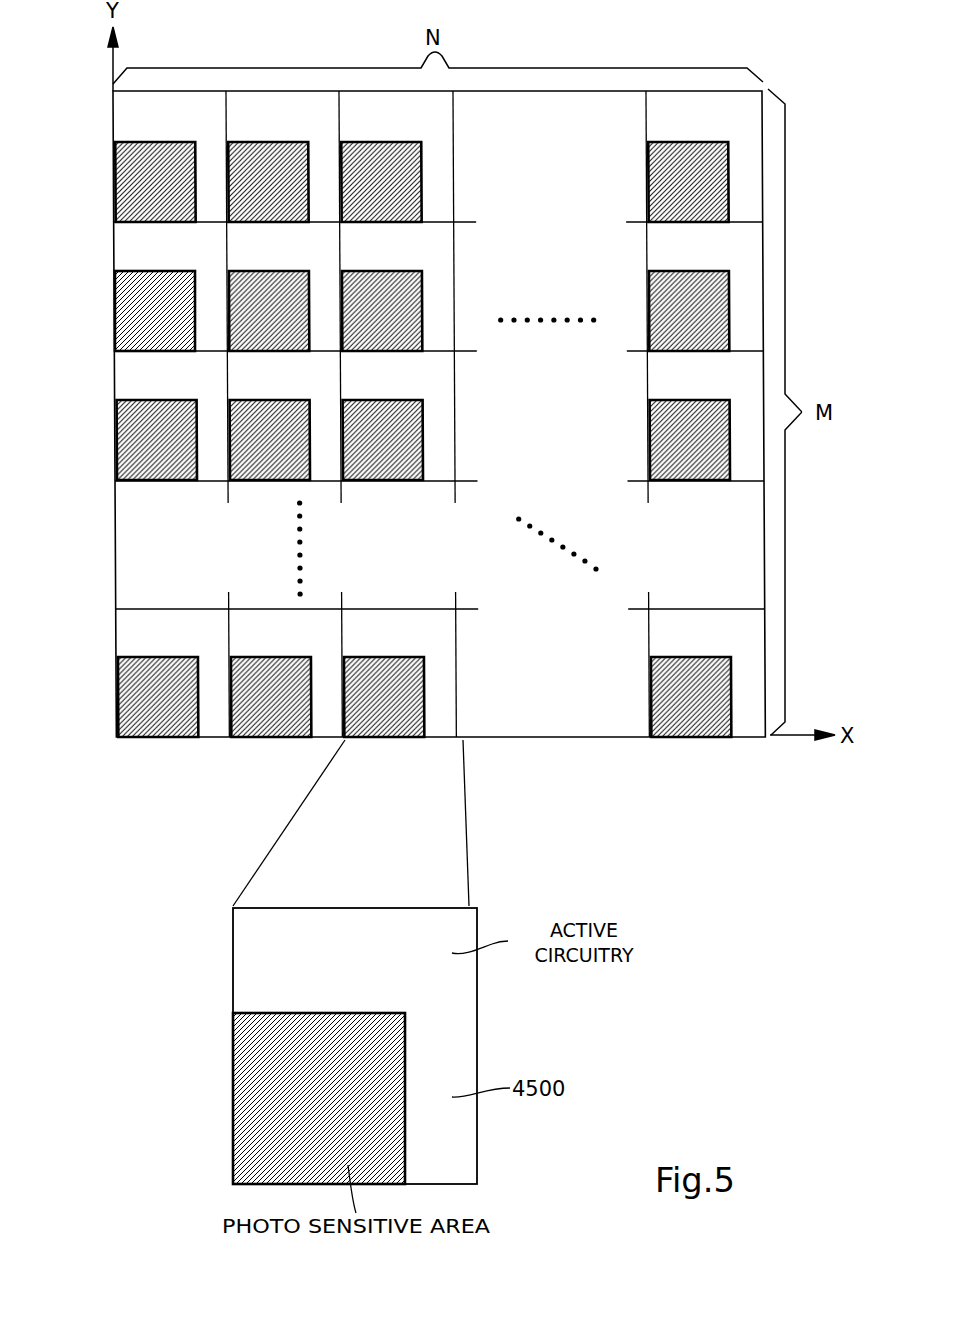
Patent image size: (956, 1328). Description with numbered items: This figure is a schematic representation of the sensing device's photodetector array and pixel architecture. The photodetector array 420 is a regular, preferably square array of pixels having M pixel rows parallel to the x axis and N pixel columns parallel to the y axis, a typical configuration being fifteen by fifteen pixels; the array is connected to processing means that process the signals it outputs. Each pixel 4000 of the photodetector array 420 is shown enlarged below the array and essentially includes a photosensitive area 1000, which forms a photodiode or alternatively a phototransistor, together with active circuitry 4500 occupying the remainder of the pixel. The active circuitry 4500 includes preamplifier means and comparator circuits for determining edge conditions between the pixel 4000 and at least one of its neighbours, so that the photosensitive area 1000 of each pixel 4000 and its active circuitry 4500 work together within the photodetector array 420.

The photodetector array 420 is at (481, 380).
The pixel 4000 is at (474, 400).
The active circuitry 4500 is at (435, 252).
The photosensitive area 1000 is at (138, 308).